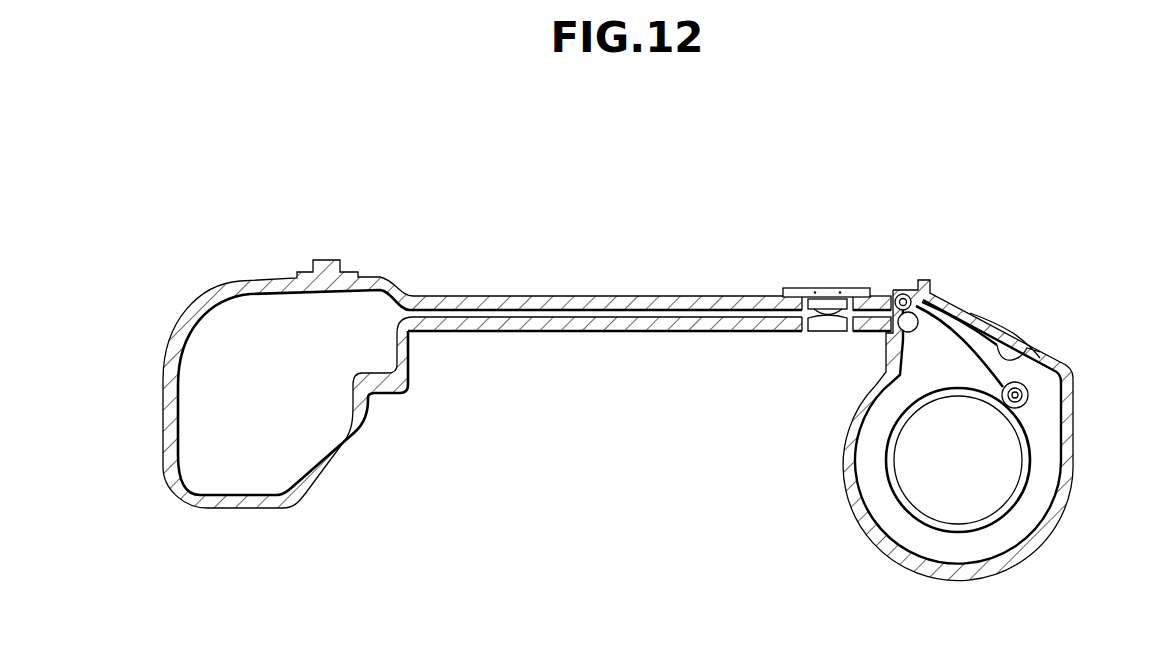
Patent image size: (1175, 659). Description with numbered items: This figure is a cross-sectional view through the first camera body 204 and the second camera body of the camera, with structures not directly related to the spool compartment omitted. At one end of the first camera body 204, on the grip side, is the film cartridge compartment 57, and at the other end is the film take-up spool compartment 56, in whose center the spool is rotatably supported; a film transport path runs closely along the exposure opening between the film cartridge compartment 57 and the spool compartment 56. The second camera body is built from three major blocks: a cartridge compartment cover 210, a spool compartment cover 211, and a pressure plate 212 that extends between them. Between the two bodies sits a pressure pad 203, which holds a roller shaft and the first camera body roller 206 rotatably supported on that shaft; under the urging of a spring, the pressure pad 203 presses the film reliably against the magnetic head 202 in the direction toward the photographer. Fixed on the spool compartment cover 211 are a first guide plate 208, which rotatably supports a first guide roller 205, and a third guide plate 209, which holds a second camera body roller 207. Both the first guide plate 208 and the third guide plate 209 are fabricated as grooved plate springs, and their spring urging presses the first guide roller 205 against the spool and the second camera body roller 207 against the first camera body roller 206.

The film take-up spool compartment 56 is at (918, 523).
The film cartridge compartment 57 is at (267, 450).
The magnetic head 202 is at (830, 288).
The pressure pad 203 is at (828, 325).
The first camera body 204 is at (612, 326).
The first guide roller 205 is at (1027, 400).
The first camera body roller 206 is at (898, 332).
The second camera body roller 207 is at (907, 294).
The first guide plate 208 is at (980, 360).
The third guide plate 209 is at (967, 330).
The cartridge compartment cover 210 is at (410, 290).
The spool compartment cover 211 is at (1072, 343).
The pressure plate 212 is at (633, 305).